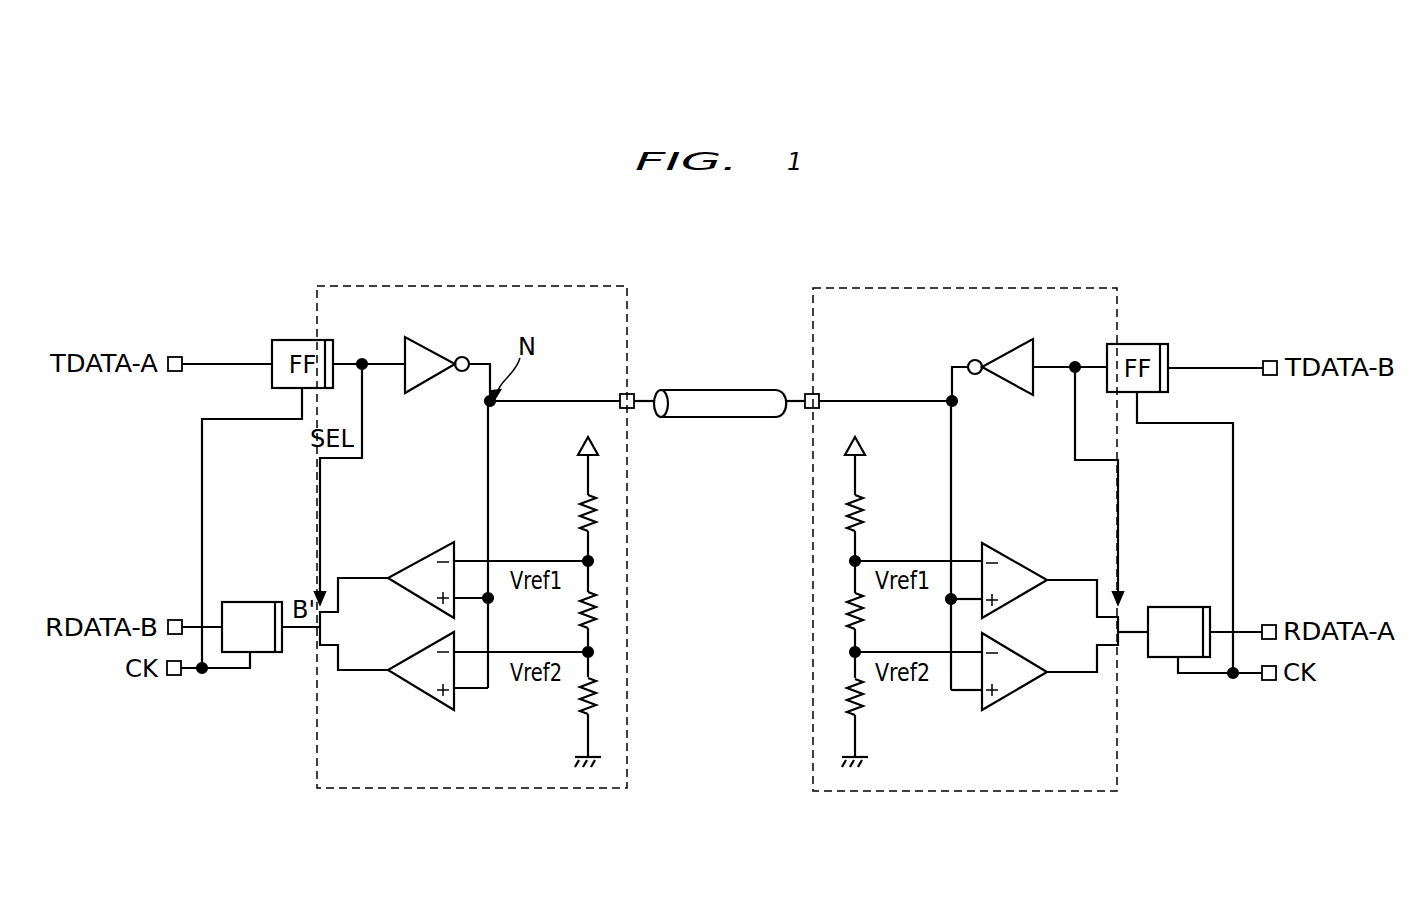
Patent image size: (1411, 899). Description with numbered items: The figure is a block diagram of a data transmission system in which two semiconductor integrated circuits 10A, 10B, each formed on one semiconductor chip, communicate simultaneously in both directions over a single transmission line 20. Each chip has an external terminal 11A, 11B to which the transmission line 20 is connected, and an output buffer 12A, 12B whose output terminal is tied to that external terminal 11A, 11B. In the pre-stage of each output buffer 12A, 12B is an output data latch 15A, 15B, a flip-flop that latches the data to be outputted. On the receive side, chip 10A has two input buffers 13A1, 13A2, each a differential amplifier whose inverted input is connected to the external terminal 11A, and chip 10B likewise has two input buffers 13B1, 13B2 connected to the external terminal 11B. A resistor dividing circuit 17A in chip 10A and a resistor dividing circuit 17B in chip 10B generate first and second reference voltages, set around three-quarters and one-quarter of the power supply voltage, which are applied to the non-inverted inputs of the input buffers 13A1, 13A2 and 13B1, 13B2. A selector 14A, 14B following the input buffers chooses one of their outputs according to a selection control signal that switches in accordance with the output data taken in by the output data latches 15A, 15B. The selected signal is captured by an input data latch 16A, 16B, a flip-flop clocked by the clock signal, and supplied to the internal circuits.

The semiconductor integrated circuit 10A is at (503, 286).
The semiconductor integrated circuit 10B is at (935, 288).
The external terminal 11A is at (621, 393).
The external terminal 11B is at (818, 394).
The output buffer 12A is at (430, 348).
The output buffer 12B is at (1010, 350).
The input buffer 13A1 is at (415, 560).
The input buffer 13A2 is at (417, 700).
The input buffer 13B1 is at (1020, 565).
The input buffer 13B2 is at (1015, 698).
The selector 14A is at (315, 643).
The selector 14B is at (1118, 648).
The output data latch 15A is at (290, 340).
The output data latch 15B is at (1150, 344).
The input data latch 16A is at (252, 602).
The input data latch 16B is at (1183, 607).
The resistor dividing circuit 17A is at (557, 504).
The resistor dividing circuit 17B is at (883, 504).
The transmission line 20 is at (720, 410).